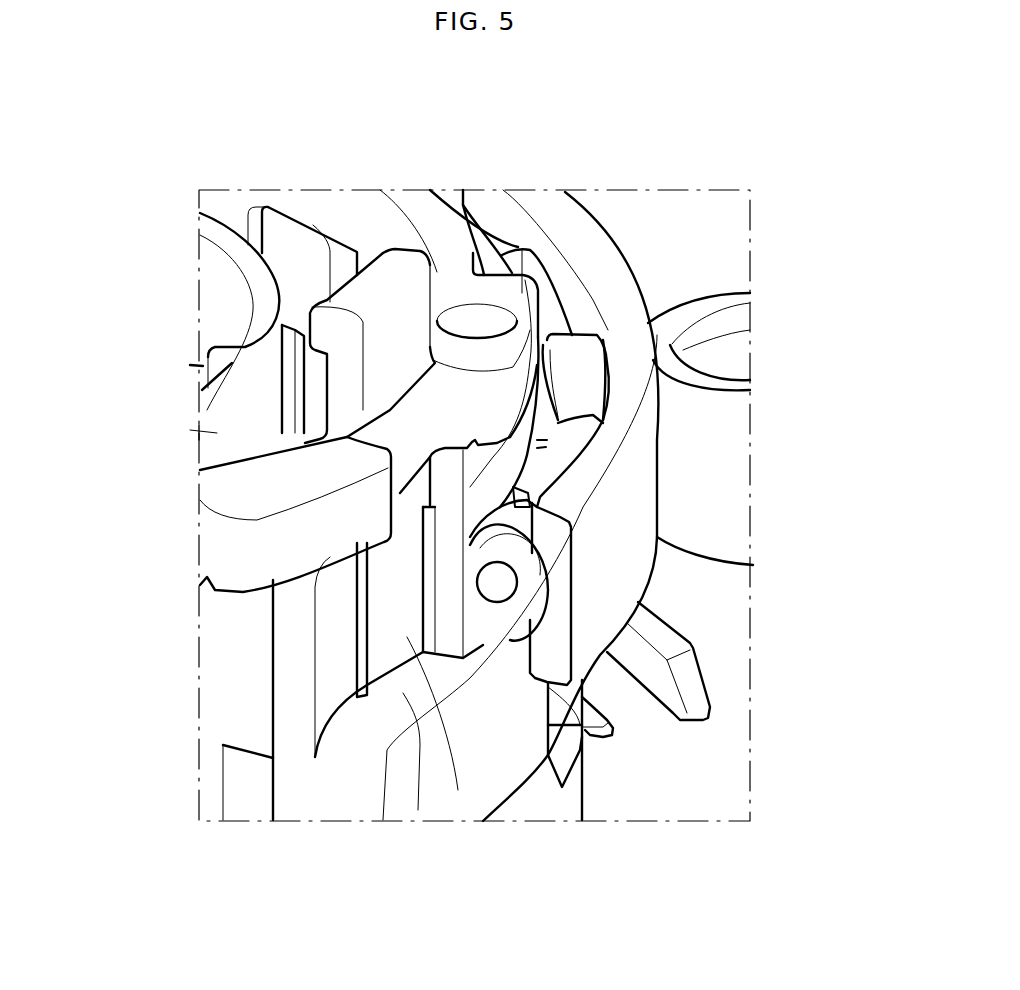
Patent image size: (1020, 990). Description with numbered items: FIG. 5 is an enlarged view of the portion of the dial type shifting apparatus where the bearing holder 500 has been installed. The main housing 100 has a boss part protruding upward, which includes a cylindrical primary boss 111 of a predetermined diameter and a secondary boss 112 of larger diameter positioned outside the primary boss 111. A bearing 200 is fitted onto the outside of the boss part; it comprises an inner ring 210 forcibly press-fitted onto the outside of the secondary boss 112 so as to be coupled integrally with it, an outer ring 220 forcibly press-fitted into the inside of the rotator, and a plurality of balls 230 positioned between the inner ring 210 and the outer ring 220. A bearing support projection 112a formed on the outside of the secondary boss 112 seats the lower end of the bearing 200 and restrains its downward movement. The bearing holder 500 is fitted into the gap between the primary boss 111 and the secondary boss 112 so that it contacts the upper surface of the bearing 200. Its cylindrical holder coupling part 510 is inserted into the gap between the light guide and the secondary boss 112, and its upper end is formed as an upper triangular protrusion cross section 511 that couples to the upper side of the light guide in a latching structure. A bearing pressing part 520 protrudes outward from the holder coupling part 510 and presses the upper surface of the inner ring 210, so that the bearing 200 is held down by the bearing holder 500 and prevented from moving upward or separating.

The main housing 100 is at (718, 765).
The primary boss 111 is at (217, 433).
The secondary boss 112 is at (458, 790).
The bearing support projection 112a is at (418, 810).
The bearing 200 is at (617, 230).
The inner ring 210 is at (507, 463).
The outer ring 220 is at (617, 265).
The balls 230 is at (580, 380).
The bearing holder 500 is at (185, 520).
The holder coupling part 510 is at (343, 383).
The upper triangular protrusion cross section 511 is at (390, 275).
The bearing pressing part 520 is at (522, 262).